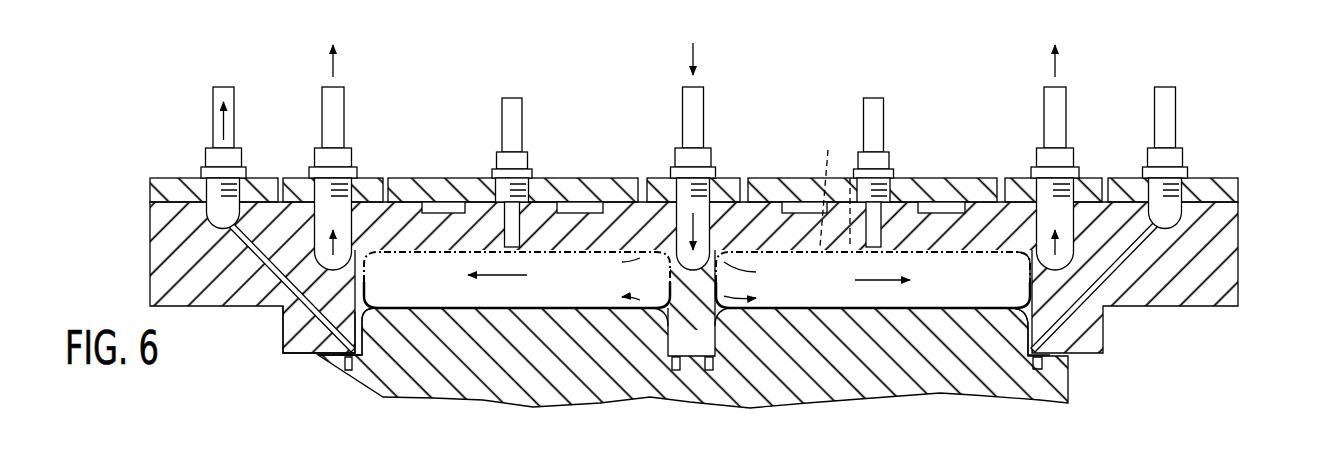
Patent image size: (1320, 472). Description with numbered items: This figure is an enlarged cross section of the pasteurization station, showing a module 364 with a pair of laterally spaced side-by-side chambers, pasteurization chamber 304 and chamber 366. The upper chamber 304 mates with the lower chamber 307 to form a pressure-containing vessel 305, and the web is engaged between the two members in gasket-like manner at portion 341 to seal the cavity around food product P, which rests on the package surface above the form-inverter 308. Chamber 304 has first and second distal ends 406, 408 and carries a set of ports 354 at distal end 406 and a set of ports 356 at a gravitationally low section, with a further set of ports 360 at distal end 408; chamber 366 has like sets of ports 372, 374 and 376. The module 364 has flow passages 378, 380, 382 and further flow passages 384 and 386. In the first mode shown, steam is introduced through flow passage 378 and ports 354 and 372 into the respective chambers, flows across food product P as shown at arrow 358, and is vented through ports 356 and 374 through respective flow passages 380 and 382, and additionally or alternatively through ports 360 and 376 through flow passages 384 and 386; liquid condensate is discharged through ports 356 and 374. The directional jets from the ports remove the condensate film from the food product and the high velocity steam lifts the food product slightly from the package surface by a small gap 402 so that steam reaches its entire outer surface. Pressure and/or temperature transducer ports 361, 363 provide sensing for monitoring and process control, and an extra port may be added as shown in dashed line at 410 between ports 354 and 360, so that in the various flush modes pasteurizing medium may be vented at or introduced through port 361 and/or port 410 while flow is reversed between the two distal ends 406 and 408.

The pasteurization chamber 304 is at (973, 225).
The pressure-containing vessel 305 is at (300, 327).
The lower chamber 307 is at (1060, 387).
The form-inverter 308 is at (892, 318).
The sealed portion 341 is at (317, 357).
The ports 354 is at (747, 256).
The ports 356 is at (1103, 308).
The arrow 358 is at (893, 278).
The ports 360 is at (1025, 265).
The transducer port 361 is at (905, 212).
The transducer port 363 is at (518, 237).
The module 364 is at (770, 205).
The chamber 366 is at (625, 240).
The ports 372 is at (632, 272).
The ports 374 is at (293, 307).
The ports 376 is at (370, 262).
The flow passage 378 is at (712, 205).
The flow passage 380 is at (1170, 215).
The flow passage 382 is at (222, 210).
The flow passage 384 is at (1062, 212).
The flow passage 386 is at (325, 212).
The gap 402 is at (373, 335).
The first distal end 406 is at (745, 330).
The second distal end 408 is at (1018, 330).
The extra port 410 is at (831, 185).